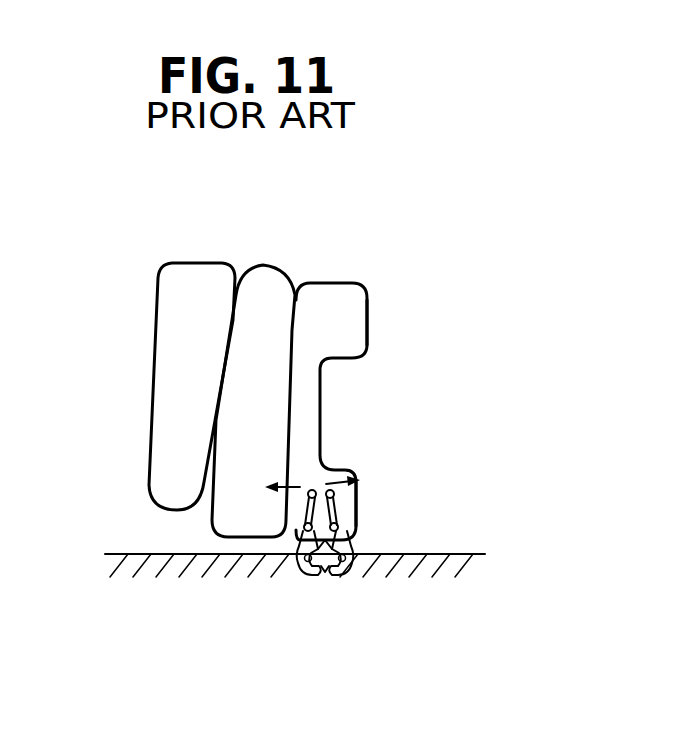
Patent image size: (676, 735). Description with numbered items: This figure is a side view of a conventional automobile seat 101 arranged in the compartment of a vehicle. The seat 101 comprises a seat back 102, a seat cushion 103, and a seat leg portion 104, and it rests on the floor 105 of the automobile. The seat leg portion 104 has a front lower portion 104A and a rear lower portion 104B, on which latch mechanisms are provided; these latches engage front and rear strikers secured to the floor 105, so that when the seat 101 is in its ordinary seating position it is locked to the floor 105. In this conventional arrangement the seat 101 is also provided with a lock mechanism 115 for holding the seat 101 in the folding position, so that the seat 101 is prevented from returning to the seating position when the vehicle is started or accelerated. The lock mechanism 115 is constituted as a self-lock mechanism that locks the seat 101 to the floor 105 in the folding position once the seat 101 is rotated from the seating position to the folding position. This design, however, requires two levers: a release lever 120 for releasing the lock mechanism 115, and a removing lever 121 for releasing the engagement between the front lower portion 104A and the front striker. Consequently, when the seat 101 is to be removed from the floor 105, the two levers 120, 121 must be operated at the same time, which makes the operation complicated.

The seat 101 is at (128, 293).
The seat back 102 is at (203, 277).
The seat cushion 103 is at (272, 280).
The seat leg portion 104 is at (315, 293).
The front lower portion 104A is at (355, 512).
The rear lower portion 104B is at (370, 315).
The floor 105 is at (418, 553).
The lock mechanism 115 is at (323, 595).
The release lever 120 is at (305, 508).
The removing lever 121 is at (358, 481).